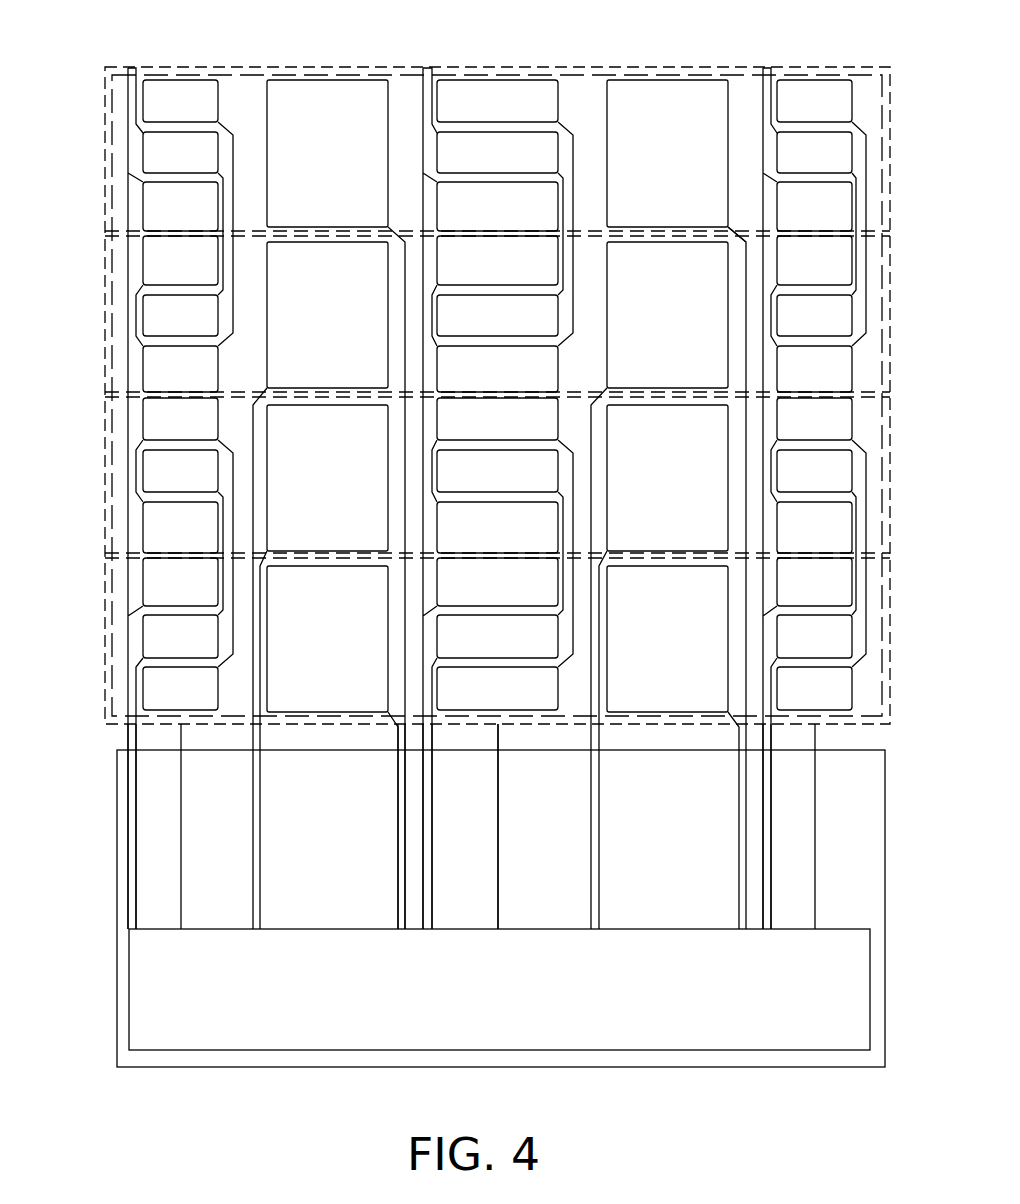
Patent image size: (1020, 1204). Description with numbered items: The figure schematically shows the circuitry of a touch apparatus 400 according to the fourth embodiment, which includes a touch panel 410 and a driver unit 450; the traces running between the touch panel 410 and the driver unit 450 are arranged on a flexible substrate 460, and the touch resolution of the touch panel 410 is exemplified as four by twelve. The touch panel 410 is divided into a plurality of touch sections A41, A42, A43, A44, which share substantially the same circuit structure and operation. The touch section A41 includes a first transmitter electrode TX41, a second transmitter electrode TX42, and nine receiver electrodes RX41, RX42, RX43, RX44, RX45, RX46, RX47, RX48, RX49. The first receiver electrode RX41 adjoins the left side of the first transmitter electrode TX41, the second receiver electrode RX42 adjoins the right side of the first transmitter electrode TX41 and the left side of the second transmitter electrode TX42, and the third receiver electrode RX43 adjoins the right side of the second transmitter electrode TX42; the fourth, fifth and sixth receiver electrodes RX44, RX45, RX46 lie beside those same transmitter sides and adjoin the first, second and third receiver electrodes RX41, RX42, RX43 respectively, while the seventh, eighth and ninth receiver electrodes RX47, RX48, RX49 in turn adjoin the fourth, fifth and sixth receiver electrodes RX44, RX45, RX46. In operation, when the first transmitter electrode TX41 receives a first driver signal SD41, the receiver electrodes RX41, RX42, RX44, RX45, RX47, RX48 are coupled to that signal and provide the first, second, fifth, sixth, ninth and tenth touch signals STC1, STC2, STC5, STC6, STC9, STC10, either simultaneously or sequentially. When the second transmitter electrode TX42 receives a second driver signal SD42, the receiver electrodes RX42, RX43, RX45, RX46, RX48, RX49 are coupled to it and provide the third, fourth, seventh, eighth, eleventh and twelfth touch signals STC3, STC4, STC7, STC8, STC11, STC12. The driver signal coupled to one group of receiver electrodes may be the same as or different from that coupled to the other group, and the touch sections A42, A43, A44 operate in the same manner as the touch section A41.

The touch apparatus 400 is at (843, 1116).
The touch panel 410 is at (105, 95).
The driver unit 450 is at (633, 1068).
The flexible substrate 460 is at (178, 1068).
The touch section A41 is at (105, 155).
The touch section A42 is at (105, 315).
The touch section A43 is at (105, 477).
The touch section A44 is at (105, 645).
The first transmitter electrode TX41 is at (327, 396).
The second transmitter electrode TX42 is at (667, 396).
The first receiver electrode RX41 is at (180, 395).
The second receiver electrode RX42 is at (497, 395).
The third receiver electrode RX43 is at (814, 395).
The fourth receiver electrode RX44 is at (180, 395).
The fifth receiver electrode RX45 is at (497, 395).
The sixth receiver electrode RX46 is at (814, 395).
The seventh receiver electrode RX47 is at (180, 394).
The eighth receiver electrode RX48 is at (497, 394).
The ninth receiver electrode RX49 is at (814, 394).
The first driver signal SD41 is at (410, 234).
The second driver signal SD42 is at (750, 234).
The first touch signal STC1 is at (173, 763).
The second touch signal STC2 is at (500, 851).
The third touch signal STC3 is at (500, 851).
The fourth touch signal STC4 is at (813, 755).
The fifth touch signal STC5 is at (148, 838).
The sixth touch signal STC6 is at (440, 816).
The seventh touch signal STC7 is at (440, 816).
The eighth touch signal STC8 is at (775, 797).
The ninth touch signal STC9 is at (128, 800).
The tenth touch signal STC10 is at (425, 780).
The eleventh touch signal STC11 is at (425, 780).
The twelfth touch signal STC12 is at (763, 825).